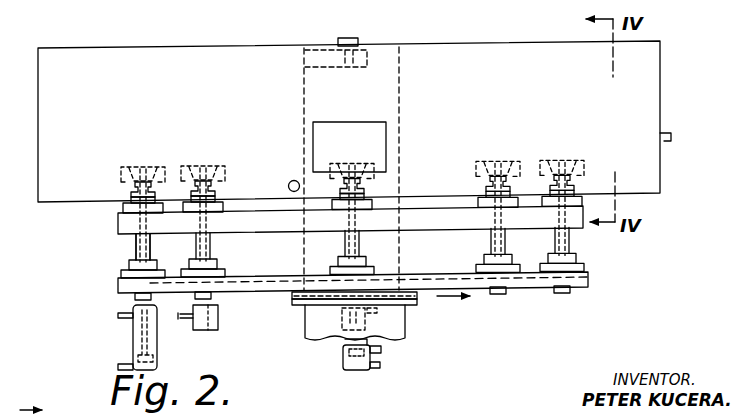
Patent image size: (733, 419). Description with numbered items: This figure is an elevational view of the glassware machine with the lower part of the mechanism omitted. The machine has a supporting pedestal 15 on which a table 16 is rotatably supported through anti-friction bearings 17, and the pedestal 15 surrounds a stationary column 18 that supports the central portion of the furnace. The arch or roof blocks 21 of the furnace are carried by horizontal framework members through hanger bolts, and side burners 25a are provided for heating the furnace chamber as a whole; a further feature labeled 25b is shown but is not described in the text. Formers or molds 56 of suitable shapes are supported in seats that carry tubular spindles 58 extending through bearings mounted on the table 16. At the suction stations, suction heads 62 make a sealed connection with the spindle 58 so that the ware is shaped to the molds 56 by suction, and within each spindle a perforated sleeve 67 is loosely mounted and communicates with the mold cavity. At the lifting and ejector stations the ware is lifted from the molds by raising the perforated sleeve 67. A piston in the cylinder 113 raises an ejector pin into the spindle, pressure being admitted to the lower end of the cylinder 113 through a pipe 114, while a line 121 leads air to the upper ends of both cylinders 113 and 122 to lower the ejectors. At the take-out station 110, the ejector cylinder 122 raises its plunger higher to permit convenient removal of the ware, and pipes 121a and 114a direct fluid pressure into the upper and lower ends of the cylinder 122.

The supporting pedestal 15 is at (404, 247).
The table 16 is at (265, 278).
The anti-friction bearings 17 is at (421, 294).
The stationary column 18 is at (397, 71).
The arch or roof blocks 21 is at (648, 92).
The side burners 25a is at (671, 141).
The pin 25b is at (289, 187).
The formers or molds 56 is at (218, 172).
The tubular spindles 58 is at (133, 247).
The suction heads 62 is at (219, 317).
The perforated sleeve 67 is at (513, 163).
The take-out station 110 is at (375, 152).
The cylinder 113 is at (133, 347).
The pipe 114 is at (118, 368).
The pipe 114a is at (378, 368).
The line 121 is at (118, 315).
The pipe 121a is at (381, 350).
The ejector cylinder 122 is at (343, 358).